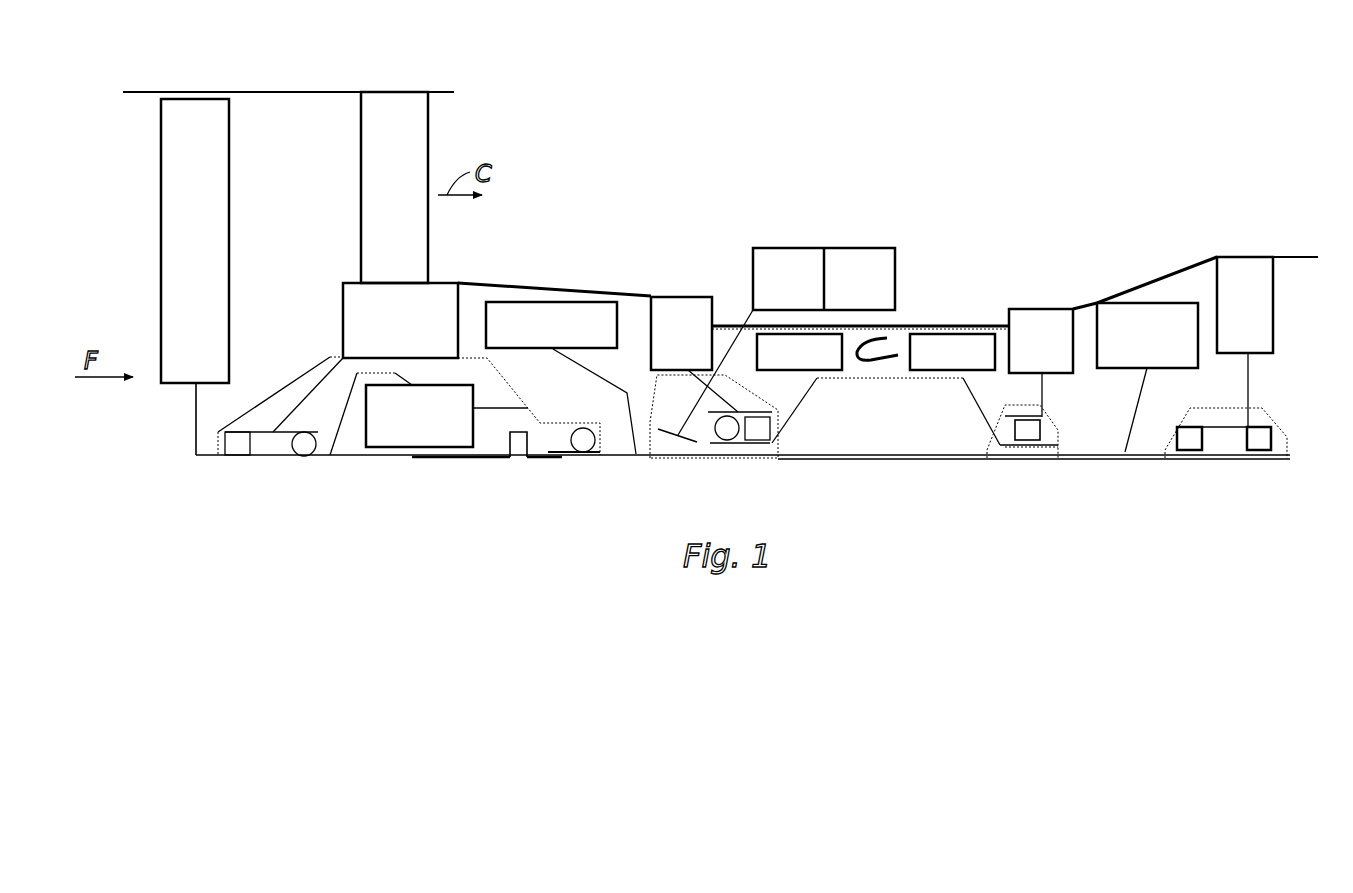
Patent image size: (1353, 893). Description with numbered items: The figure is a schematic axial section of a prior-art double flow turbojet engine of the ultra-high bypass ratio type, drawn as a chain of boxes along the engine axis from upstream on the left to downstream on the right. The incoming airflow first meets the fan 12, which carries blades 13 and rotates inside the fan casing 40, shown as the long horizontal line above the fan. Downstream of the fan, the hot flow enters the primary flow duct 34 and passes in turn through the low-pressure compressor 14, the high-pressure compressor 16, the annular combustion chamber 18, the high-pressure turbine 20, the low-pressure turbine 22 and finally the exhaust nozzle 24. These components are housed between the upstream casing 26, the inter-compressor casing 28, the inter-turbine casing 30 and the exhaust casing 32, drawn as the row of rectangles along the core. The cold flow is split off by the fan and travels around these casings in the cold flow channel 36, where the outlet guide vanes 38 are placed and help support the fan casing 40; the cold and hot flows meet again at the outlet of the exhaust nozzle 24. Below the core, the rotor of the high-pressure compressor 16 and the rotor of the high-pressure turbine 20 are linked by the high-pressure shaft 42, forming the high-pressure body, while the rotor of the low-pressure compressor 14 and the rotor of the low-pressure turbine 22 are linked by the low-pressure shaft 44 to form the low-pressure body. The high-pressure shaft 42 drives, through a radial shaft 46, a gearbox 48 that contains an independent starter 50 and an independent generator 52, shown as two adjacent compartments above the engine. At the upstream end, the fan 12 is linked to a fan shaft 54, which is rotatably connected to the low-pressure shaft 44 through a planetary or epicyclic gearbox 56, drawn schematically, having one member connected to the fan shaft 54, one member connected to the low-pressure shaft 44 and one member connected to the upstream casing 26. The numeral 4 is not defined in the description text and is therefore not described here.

The web 4 is at (648, 330).
The fan 12 is at (250, 226).
The blades 13 is at (206, 162).
The low-pressure compressor 14 is at (555, 320).
The high-pressure compressor 16 is at (820, 370).
The annular combustion chamber 18 is at (888, 362).
The high-pressure turbine 20 is at (975, 348).
The low-pressure turbine 22 is at (1147, 377).
The exhaust nozzle 24 is at (1290, 257).
The upstream casing 26 is at (400, 320).
The inter-compressor casing 28 is at (681, 333).
The inter-turbine casing 30 is at (1041, 363).
The exhaust casing 32 is at (1245, 342).
The primary flow duct 34 is at (470, 302).
The cold flow channel 36 is at (437, 157).
The outlet guide vanes 38 is at (394, 187).
The fan casing 40 is at (273, 92).
The high-pressure shaft 42 is at (800, 415).
The low-pressure shaft 44 is at (625, 457).
The radial shaft 46 is at (690, 418).
The gearbox 48 is at (845, 248).
The starter 50 is at (789, 282).
The generator 52 is at (862, 282).
The fan shaft 54 is at (193, 430).
The gearbox 56 is at (447, 416).